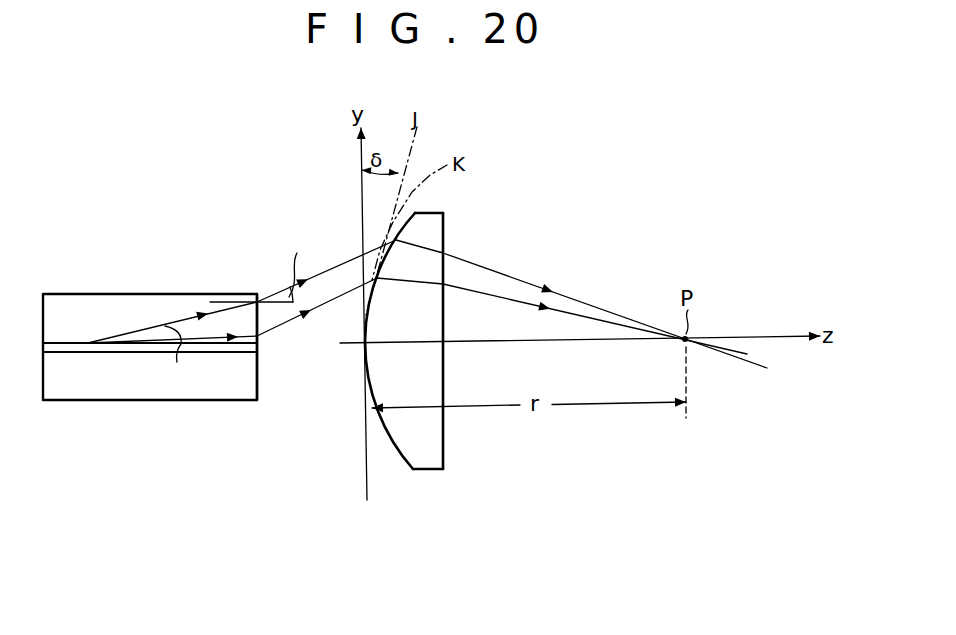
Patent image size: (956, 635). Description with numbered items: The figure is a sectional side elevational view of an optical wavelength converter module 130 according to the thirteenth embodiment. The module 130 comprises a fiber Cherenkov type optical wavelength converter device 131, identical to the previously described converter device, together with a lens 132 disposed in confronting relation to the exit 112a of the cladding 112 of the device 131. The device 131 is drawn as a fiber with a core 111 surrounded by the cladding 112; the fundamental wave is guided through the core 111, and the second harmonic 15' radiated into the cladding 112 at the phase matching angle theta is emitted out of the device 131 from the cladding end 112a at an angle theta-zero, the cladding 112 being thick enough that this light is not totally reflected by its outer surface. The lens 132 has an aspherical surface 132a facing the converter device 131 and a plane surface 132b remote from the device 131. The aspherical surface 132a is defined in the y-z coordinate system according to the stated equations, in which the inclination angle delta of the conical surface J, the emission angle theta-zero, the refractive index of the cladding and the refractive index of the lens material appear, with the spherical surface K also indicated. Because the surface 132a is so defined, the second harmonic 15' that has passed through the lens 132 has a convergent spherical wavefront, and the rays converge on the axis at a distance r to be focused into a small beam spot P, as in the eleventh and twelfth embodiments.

The optical wavelength converter module 130 is at (304, 184).
The cladding 112 is at (95, 294).
The core 111 is at (88, 350).
The cladding end 112a is at (260, 380).
The optical wavelength converter device 131 is at (427, 295).
The second harmonic 15' is at (317, 321).
The lens 132 is at (412, 351).
The aspherical surface 132a is at (401, 452).
The plane surface 132b is at (447, 447).